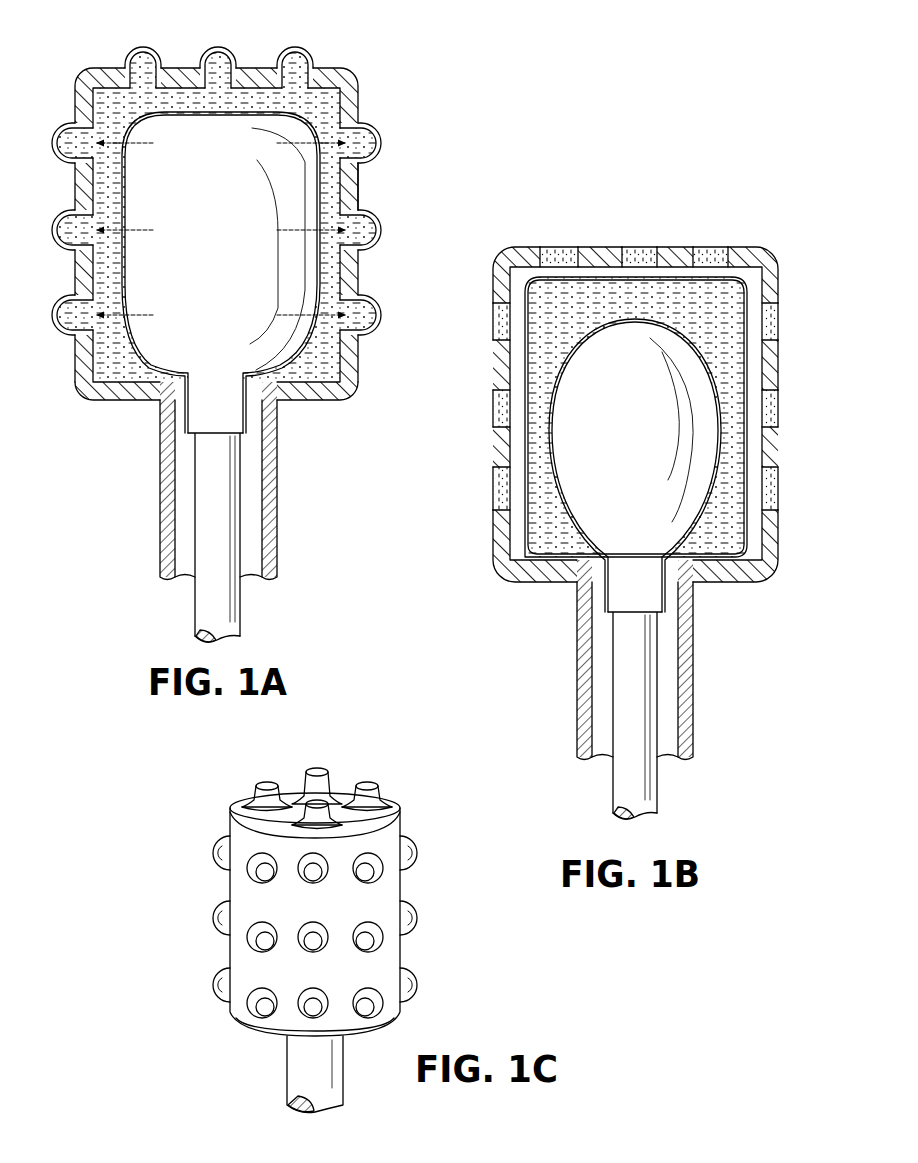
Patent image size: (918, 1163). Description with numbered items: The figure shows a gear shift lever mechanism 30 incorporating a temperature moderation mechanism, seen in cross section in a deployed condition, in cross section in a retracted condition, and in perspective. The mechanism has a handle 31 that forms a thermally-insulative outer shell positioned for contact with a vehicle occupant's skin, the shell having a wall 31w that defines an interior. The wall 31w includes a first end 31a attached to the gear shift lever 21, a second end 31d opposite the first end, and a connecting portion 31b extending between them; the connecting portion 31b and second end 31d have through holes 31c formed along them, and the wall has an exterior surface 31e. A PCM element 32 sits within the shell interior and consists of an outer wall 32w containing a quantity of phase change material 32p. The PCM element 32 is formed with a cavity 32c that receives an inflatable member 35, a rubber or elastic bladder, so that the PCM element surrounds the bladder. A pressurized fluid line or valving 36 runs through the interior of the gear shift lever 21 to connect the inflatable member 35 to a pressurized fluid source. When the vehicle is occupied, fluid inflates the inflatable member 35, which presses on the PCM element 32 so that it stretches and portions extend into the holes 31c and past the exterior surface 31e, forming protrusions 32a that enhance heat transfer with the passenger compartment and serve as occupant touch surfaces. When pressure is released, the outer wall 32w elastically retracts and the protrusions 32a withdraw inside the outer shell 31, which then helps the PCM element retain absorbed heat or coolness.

In FIG. 1A, the gear shift lever mechanism 30 is at (66, 26).
In FIG. 1A, the handle 31 is at (113, 66).
In FIG. 1B, the handle 31 is at (537, 246).
In FIG. 1C, the handle 31 is at (214, 849).
In FIG. 1A, the first end 31a is at (320, 398).
In FIG. 1B, the first end 31a is at (738, 572).
In FIG. 1A, the connecting portion 31b is at (74, 108).
In FIG. 1B, the connecting portion 31b is at (494, 286).
In FIG. 1A, the through holes 31c is at (221, 76).
In FIG. 1B, the through holes 31c is at (640, 252).
In FIG. 1A, the second end 31d is at (332, 80).
In FIG. 1B, the second end 31d is at (751, 250).
In FIG. 1A, the exterior surface 31e is at (358, 190).
In FIG. 1B, the exterior surface 31e is at (779, 368).
In FIG. 1C, the exterior surface 31e is at (390, 833).
In FIG. 1A, the wall 31w is at (352, 203).
In FIG. 1B, the wall 31w is at (773, 386).
In FIG. 1C, the wall 31w is at (285, 898).
In FIG. 1A, the PCM element 32 is at (252, 86).
In FIG. 1B, the PCM element 32 is at (677, 267).
In FIG. 1A, the protrusions 32a is at (384, 142).
In FIG. 1C, the protrusions 32a is at (262, 935).
In FIG. 1A, the cavity 32c is at (86, 292).
In FIG. 1B, the cavity 32c is at (546, 463).
In FIG. 1A, the phase change material 32p is at (176, 98).
In FIG. 1B, the phase change material 32p is at (588, 302).
In FIG. 1A, the outer wall 32w is at (80, 352).
In FIG. 1B, the outer wall 32w is at (526, 507).
In FIG. 1A, the inflatable member 35 is at (256, 200).
In FIG. 1B, the inflatable member 35 is at (673, 376).
In FIG. 1A, the gear shift lever 21 is at (165, 480).
In FIG. 1B, the gear shift lever 21 is at (585, 652).
In FIG. 1C, the gear shift lever 21 is at (296, 1062).
In FIG. 1A, the pressurized fluid line or valving 36 is at (206, 600).
In FIG. 1B, the pressurized fluid line or valving 36 is at (626, 775).